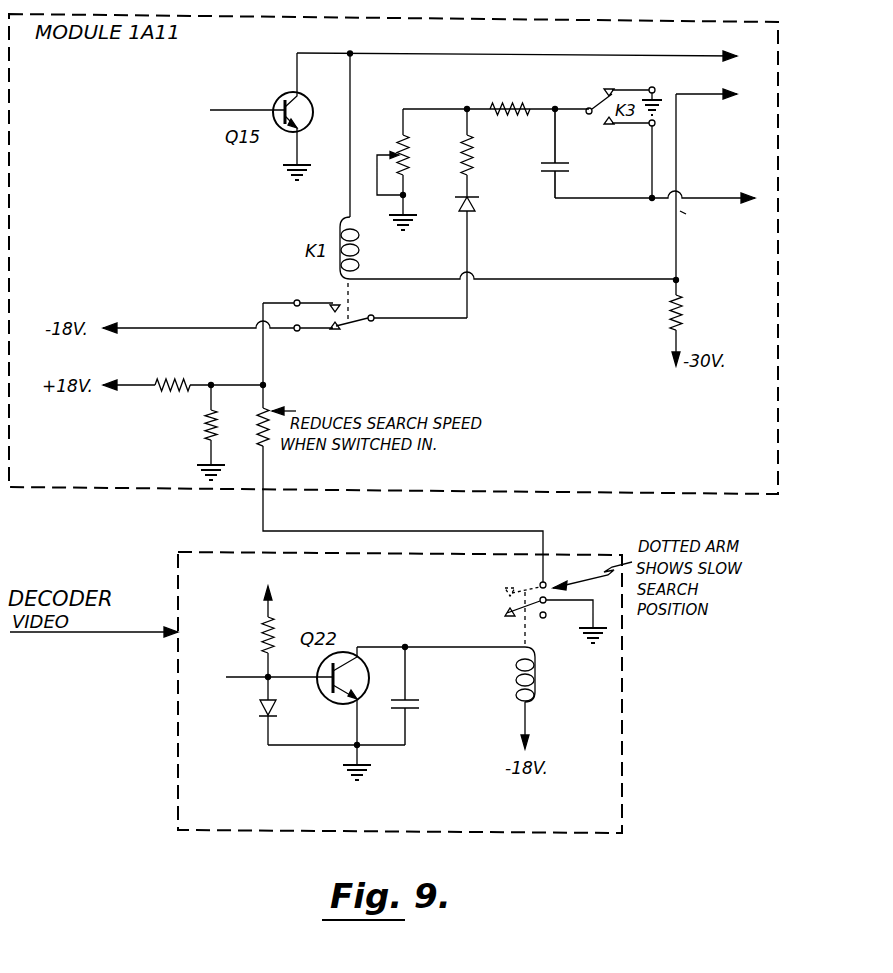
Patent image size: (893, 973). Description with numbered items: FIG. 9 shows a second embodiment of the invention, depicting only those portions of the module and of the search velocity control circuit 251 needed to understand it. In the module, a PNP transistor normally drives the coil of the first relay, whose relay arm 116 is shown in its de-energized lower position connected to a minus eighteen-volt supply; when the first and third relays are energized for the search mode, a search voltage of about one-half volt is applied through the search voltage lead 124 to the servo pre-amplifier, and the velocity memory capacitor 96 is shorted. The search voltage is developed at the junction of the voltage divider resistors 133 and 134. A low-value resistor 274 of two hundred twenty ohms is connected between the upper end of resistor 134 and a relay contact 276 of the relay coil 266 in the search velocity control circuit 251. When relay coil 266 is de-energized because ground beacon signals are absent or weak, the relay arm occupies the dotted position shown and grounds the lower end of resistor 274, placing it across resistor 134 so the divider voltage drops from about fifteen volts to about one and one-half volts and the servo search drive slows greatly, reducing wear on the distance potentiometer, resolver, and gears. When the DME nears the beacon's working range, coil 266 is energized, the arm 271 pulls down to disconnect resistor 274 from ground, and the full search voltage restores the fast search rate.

The velocity memory capacitor 96 is at (566, 176).
The search voltage lead 124 is at (712, 197).
The voltage divider resistor 133 is at (188, 380).
The voltage divider resistor 134 is at (199, 432).
The relay arm 116 is at (341, 328).
The resistor 274 is at (270, 407).
The search velocity control circuit 251 is at (248, 550).
The relay contact 276 is at (528, 584).
The relay switch arm 271 is at (510, 602).
The relay coil 266 is at (518, 677).